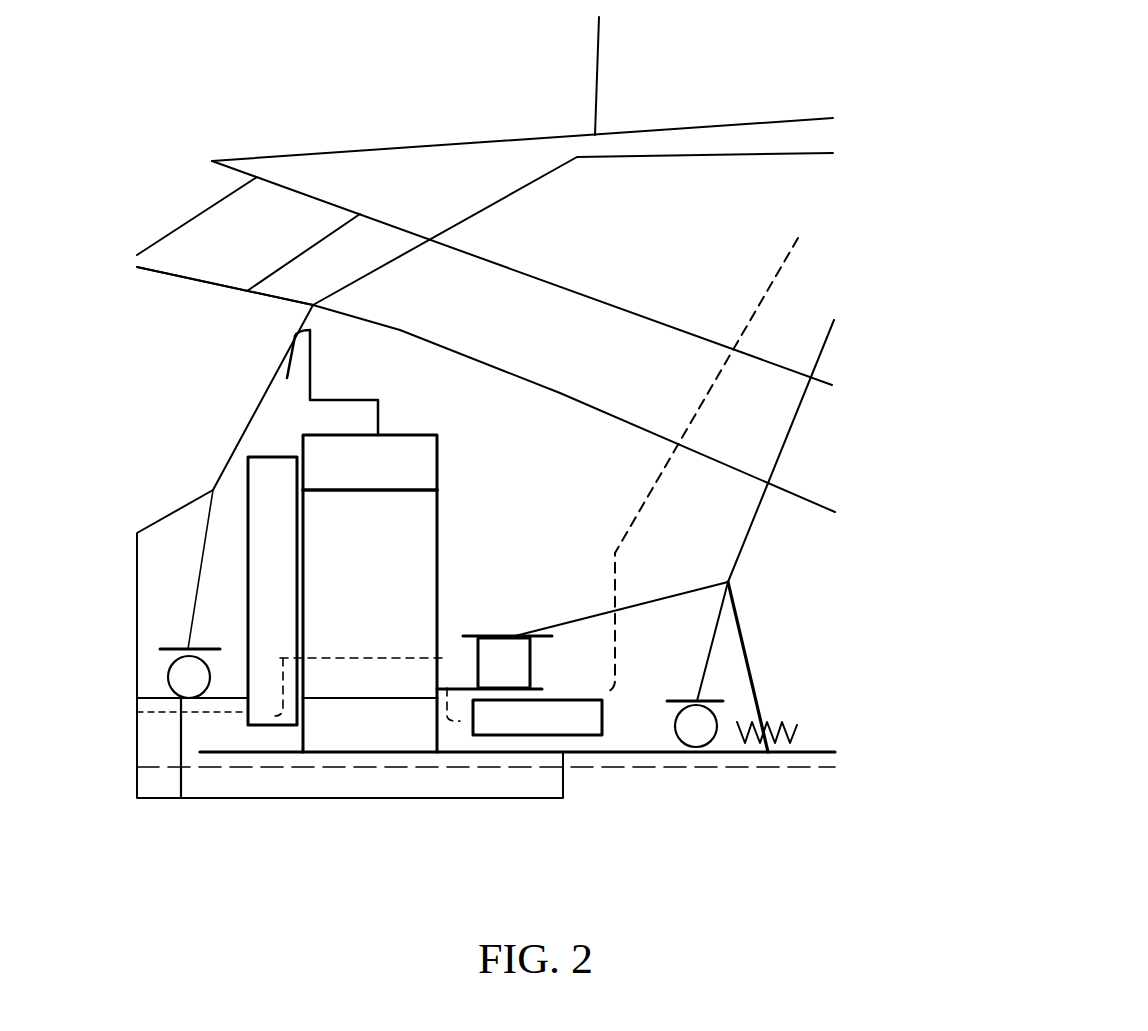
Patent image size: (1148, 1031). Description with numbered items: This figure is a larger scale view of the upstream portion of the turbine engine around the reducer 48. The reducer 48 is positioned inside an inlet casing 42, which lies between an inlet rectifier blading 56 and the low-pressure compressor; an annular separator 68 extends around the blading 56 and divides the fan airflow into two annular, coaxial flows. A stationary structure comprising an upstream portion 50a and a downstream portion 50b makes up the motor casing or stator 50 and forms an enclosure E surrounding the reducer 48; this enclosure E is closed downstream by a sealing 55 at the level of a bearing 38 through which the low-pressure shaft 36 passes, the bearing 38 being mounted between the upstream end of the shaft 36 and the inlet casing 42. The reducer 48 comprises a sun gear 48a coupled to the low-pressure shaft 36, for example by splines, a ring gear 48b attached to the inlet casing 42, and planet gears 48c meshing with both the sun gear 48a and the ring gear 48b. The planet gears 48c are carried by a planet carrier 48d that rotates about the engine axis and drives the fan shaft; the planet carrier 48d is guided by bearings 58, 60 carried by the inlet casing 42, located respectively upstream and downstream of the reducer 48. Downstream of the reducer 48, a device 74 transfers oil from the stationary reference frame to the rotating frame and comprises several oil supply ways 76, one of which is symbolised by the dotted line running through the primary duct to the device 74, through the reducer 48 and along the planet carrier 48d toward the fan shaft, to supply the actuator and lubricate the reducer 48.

The low-pressure shaft 36 is at (635, 753).
The bearing 38 is at (687, 733).
The inlet casing 42 is at (843, 197).
The reducer 48 is at (245, 587).
The sun gear 48a is at (385, 718).
The ring gear 48b is at (343, 477).
The planet gears 48c is at (343, 562).
The planet carrier 48d is at (268, 642).
The motor casing or stator 50 is at (515, 551).
The upstream portion 50a is at (232, 447).
The downstream portion 50b is at (745, 620).
The sealing 55 is at (797, 730).
The inlet rectifier blading 56 is at (260, 210).
The bearing 58 is at (190, 687).
The bearing 60 is at (502, 662).
The annular separator 68 is at (212, 160).
The device for transferring oil 74 is at (518, 715).
The oil supply ways 76 is at (340, 658).
The enclosure E is at (687, 497).